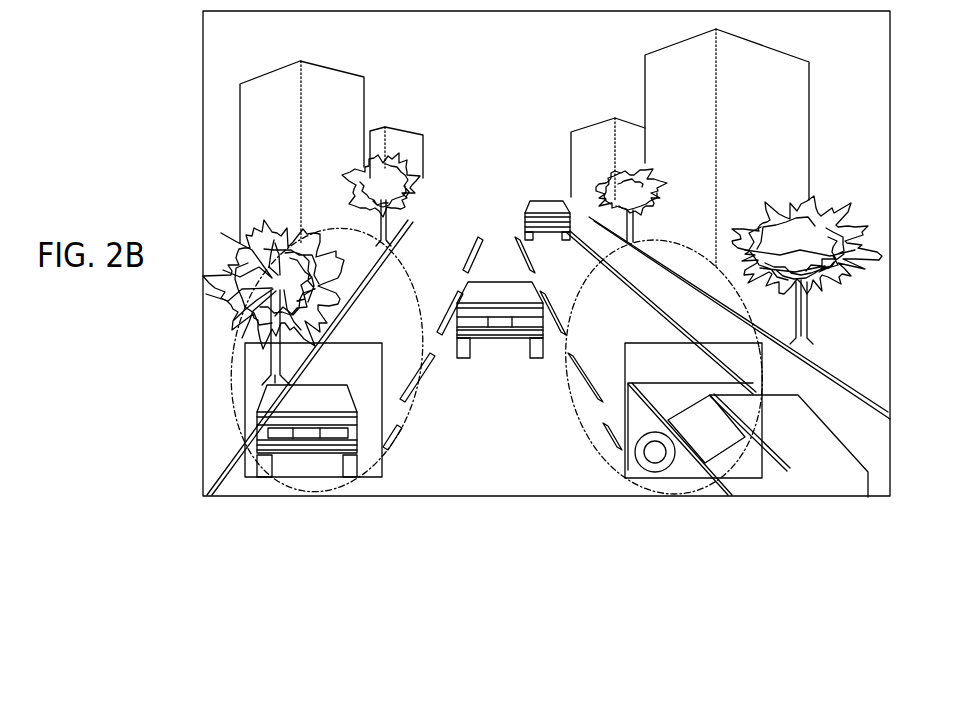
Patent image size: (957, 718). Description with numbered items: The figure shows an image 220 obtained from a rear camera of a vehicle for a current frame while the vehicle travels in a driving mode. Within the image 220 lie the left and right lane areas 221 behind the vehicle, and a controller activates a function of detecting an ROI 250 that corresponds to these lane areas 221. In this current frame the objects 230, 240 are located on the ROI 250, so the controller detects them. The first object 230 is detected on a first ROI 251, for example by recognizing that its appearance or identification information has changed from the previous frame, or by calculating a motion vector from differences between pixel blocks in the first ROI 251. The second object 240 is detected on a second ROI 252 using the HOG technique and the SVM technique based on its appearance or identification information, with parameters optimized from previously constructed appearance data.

The image 220 is at (203, 40).
The lane area 221 is at (293, 490).
The first object 230 is at (262, 424).
The second object 240 is at (818, 485).
The ROI 250 is at (503, 494).
The first ROI 251 is at (362, 480).
The second ROI 252 is at (677, 455).